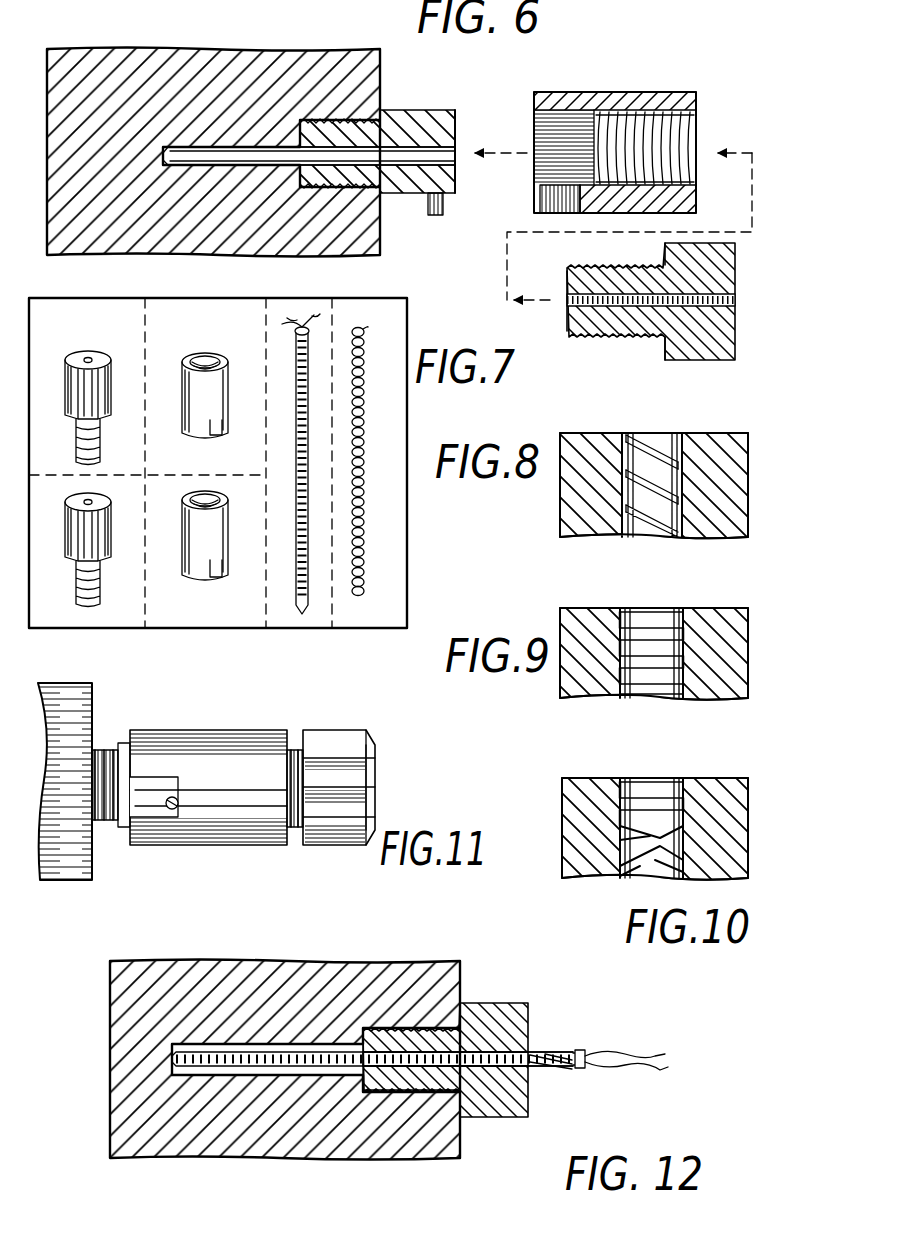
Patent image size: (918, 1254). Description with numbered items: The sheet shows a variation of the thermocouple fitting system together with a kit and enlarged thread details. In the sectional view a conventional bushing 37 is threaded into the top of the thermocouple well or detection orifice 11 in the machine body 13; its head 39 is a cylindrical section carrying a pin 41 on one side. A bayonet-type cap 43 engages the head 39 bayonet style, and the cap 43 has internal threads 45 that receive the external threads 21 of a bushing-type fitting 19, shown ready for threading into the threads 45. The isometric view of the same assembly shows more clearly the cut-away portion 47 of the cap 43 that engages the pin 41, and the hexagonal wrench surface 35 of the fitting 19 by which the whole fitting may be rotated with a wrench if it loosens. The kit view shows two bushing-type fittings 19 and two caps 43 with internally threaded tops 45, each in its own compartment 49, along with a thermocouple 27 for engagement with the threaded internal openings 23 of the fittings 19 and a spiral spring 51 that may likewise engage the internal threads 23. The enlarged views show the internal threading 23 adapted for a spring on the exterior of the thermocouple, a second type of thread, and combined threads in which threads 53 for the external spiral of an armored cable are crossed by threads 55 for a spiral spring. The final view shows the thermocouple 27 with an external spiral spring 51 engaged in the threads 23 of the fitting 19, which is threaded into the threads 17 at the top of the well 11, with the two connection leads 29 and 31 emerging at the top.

In FIG. 6, the detection orifice 11 is at (252, 155).
In FIG. 12, the detection orifice 11 is at (317, 1048).
In FIG. 11, the machine body 13 is at (64, 738).
In FIG. 12, the machine body 13 is at (358, 962).
In FIG. 12, the threads 17 is at (402, 1030).
In FIG. 6, the bushing-type fitting 19 is at (706, 365).
In FIG. 7, the bushing-type fitting 19 is at (92, 343).
In FIG. 8, the bushing-type fitting 19 is at (590, 430).
In FIG. 9, the bushing-type fitting 19 is at (582, 606).
In FIG. 10, the bushing-type fitting 19 is at (705, 777).
In FIG. 11, the bushing-type fitting 19 is at (346, 732).
In FIG. 12, the bushing-type fitting 19 is at (495, 1120).
In FIG. 6, the external threads 21 is at (602, 334).
In FIG. 11, the external threads 21 is at (295, 828).
In FIG. 12, the external threads 21 is at (400, 1091).
In FIG. 6, the internal threads 23 is at (735, 300).
In FIG. 8, the internal threads 23 is at (643, 537).
In FIG. 9, the internal threads 23 is at (638, 698).
In FIG. 12, the internal threads 23 is at (475, 1040).
In FIG. 7, the thermocouple 27 is at (307, 602).
In FIG. 12, the thermocouple 27 is at (546, 1069).
In FIG. 12, the connection lead 29 is at (613, 1052).
In FIG. 12, the connection lead 31 is at (618, 1072).
In FIG. 11, the hexagonal wrench surface 35 is at (366, 786).
In FIG. 6, the conventional bushing 37 is at (409, 106).
In FIG. 11, the conventional bushing 37 is at (108, 830).
In FIG. 6, the head 39 is at (458, 134).
In FIG. 11, the head 39 is at (125, 739).
In FIG. 6, the pin 41 is at (435, 200).
In FIG. 11, the pin 41 is at (174, 812).
In FIG. 6, the bayonet-type cap 43 is at (623, 91).
In FIG. 7, the bayonet-type cap 43 is at (183, 384).
In FIG. 11, the bayonet-type cap 43 is at (190, 730).
In FIG. 6, the internal threads 45 is at (682, 142).
In FIG. 7, the internal threads 45 is at (205, 355).
In FIG. 6, the cut-away portion 47 is at (548, 205).
In FIG. 11, the cut-away portion 47 is at (172, 790).
In FIG. 7, the compartment 49 is at (180, 463).
In FIG. 7, the spiral spring 51 is at (360, 595).
In FIG. 12, the spiral spring 51 is at (545, 1052).
In FIG. 10, the threads 53 is at (643, 779).
In FIG. 10, the threads 55 is at (647, 873).